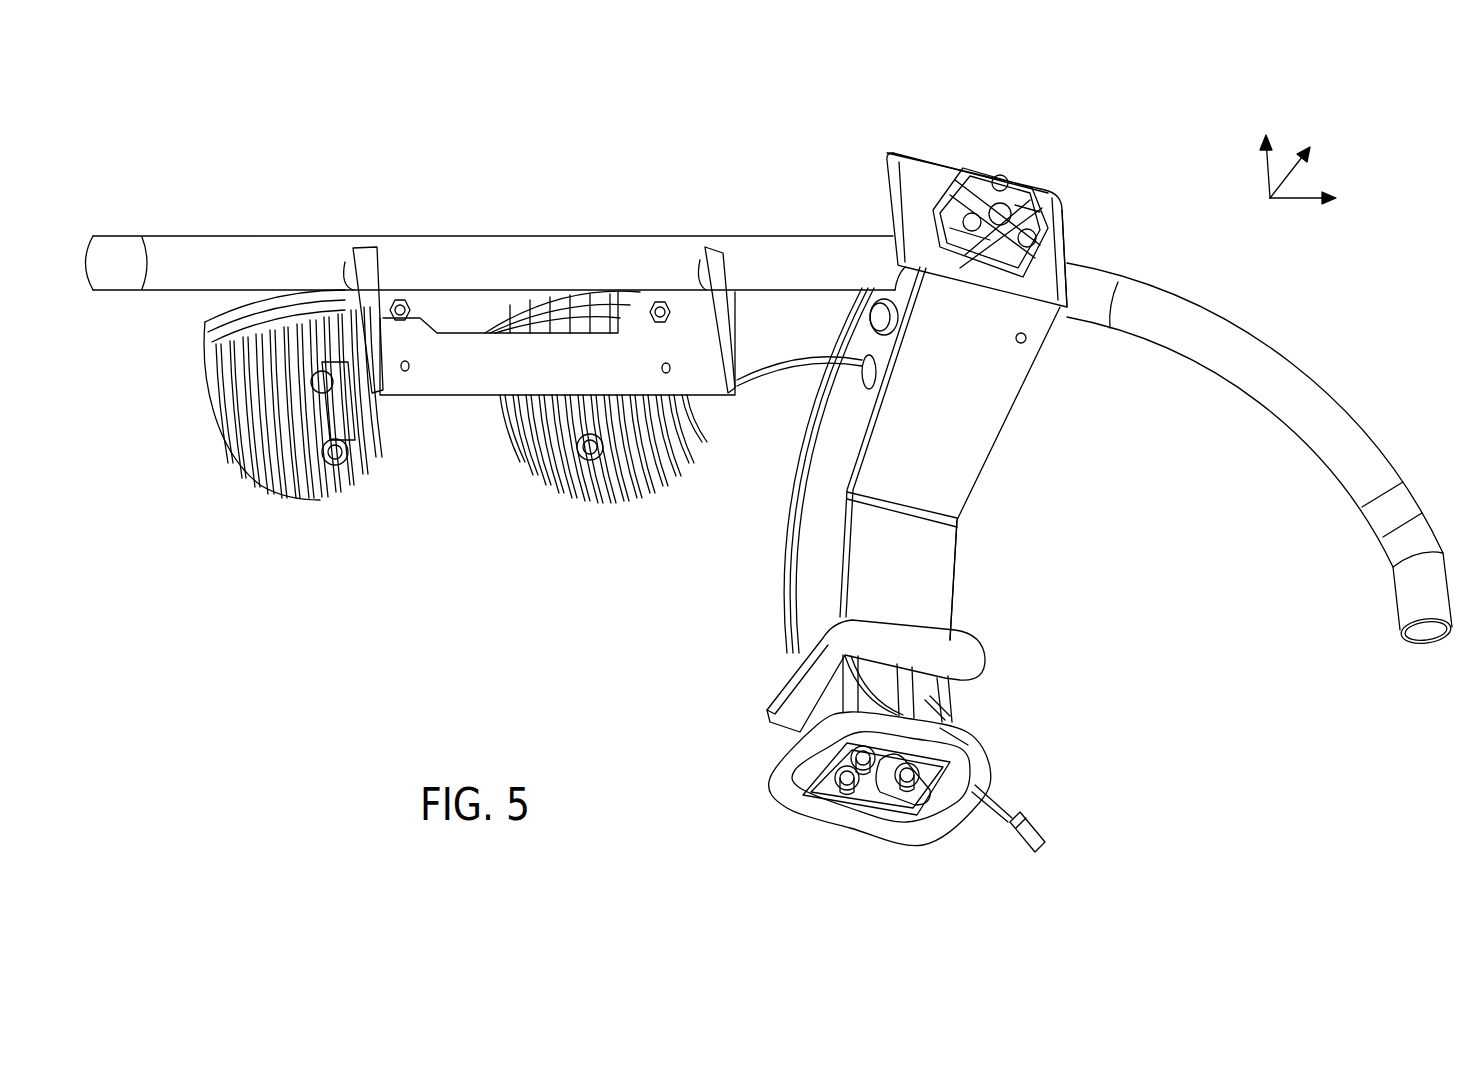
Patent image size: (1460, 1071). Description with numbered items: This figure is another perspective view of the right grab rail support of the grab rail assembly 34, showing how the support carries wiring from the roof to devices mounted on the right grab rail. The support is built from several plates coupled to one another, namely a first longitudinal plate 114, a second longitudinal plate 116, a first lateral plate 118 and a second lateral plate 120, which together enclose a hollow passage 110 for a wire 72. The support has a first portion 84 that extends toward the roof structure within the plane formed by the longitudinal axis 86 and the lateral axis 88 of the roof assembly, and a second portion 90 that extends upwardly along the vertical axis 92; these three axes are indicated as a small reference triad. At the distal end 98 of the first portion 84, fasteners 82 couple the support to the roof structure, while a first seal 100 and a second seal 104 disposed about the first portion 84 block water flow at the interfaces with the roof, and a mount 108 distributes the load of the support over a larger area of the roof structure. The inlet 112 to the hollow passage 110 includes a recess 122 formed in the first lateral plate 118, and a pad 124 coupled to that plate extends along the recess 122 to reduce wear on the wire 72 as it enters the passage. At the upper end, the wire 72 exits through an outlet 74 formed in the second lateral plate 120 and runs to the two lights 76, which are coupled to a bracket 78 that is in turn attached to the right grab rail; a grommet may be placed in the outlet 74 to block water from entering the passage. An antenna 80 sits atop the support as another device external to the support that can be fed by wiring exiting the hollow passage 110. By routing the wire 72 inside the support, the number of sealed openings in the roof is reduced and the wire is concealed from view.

The grab rail assembly 34 is at (1183, 154).
The wire 72 is at (778, 372).
The outlet 74 is at (874, 380).
The lights 76 is at (250, 462).
The bracket 78 is at (478, 388).
The antenna 80 is at (1025, 192).
The fasteners 82 is at (862, 773).
The first portion 84 is at (956, 584).
The longitudinal axis 86 is at (1296, 200).
The lateral axis 88 is at (1268, 172).
The second portion 90 is at (995, 410).
The vertical axis 92 is at (1298, 165).
The distal end 98 is at (849, 805).
The first seal 100 is at (944, 665).
The second seal 104 is at (783, 770).
The mount 108 is at (917, 808).
The hollow passage 110 is at (926, 682).
The inlet 112 is at (888, 684).
The first longitudinal plate 114 is at (948, 470).
The second longitudinal plate 116 is at (1060, 218).
The first lateral plate 118 is at (965, 518).
The second lateral plate 120 is at (818, 540).
The recess 122 is at (950, 726).
The pad 124 is at (940, 718).